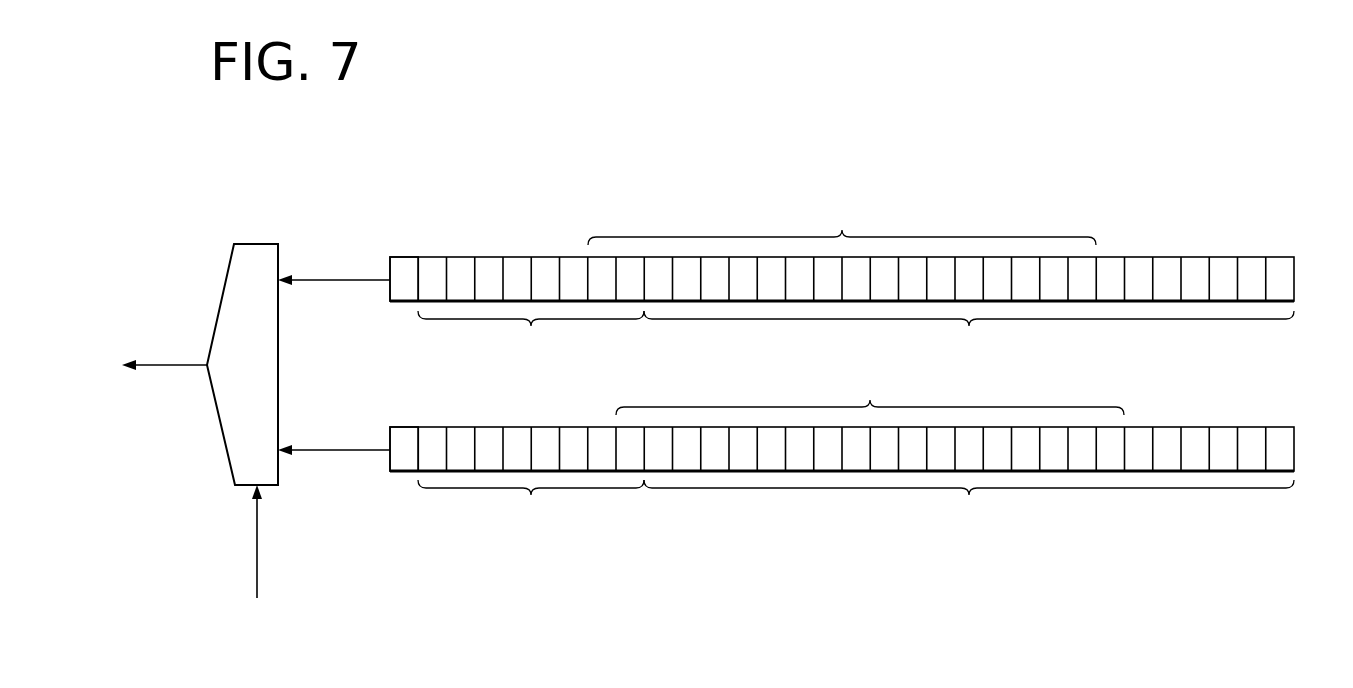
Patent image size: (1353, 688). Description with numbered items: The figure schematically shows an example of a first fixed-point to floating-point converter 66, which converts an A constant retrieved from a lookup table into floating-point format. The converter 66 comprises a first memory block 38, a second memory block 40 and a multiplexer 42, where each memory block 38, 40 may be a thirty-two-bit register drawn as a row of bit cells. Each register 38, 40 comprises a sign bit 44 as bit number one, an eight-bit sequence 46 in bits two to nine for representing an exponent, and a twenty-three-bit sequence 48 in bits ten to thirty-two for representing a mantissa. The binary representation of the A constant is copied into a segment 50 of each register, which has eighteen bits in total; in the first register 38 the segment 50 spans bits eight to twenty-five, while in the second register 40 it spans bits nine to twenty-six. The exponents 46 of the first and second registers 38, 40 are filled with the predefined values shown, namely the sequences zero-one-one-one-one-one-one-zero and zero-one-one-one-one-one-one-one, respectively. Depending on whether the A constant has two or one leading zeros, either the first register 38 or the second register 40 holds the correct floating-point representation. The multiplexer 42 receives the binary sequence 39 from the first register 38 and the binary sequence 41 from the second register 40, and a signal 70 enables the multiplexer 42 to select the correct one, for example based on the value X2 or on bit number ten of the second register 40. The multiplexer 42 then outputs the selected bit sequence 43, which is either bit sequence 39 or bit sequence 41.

The first fixed-point to floating-point converter 66 is at (579, 163).
The first memory block 38 is at (1296, 280).
The second memory block 40 is at (1296, 450).
The sign bit 44 is at (404, 304).
The eight-bit sequence 46 is at (531, 420).
The 23-bit sequence 48 is at (969, 420).
The segment 50 is at (856, 308).
The multiplexer 42 is at (255, 244).
The binary sequence 39 is at (318, 280).
The binary sequence 41 is at (318, 450).
The selected bit sequence 43 is at (175, 365).
The signal 70 is at (257, 556).